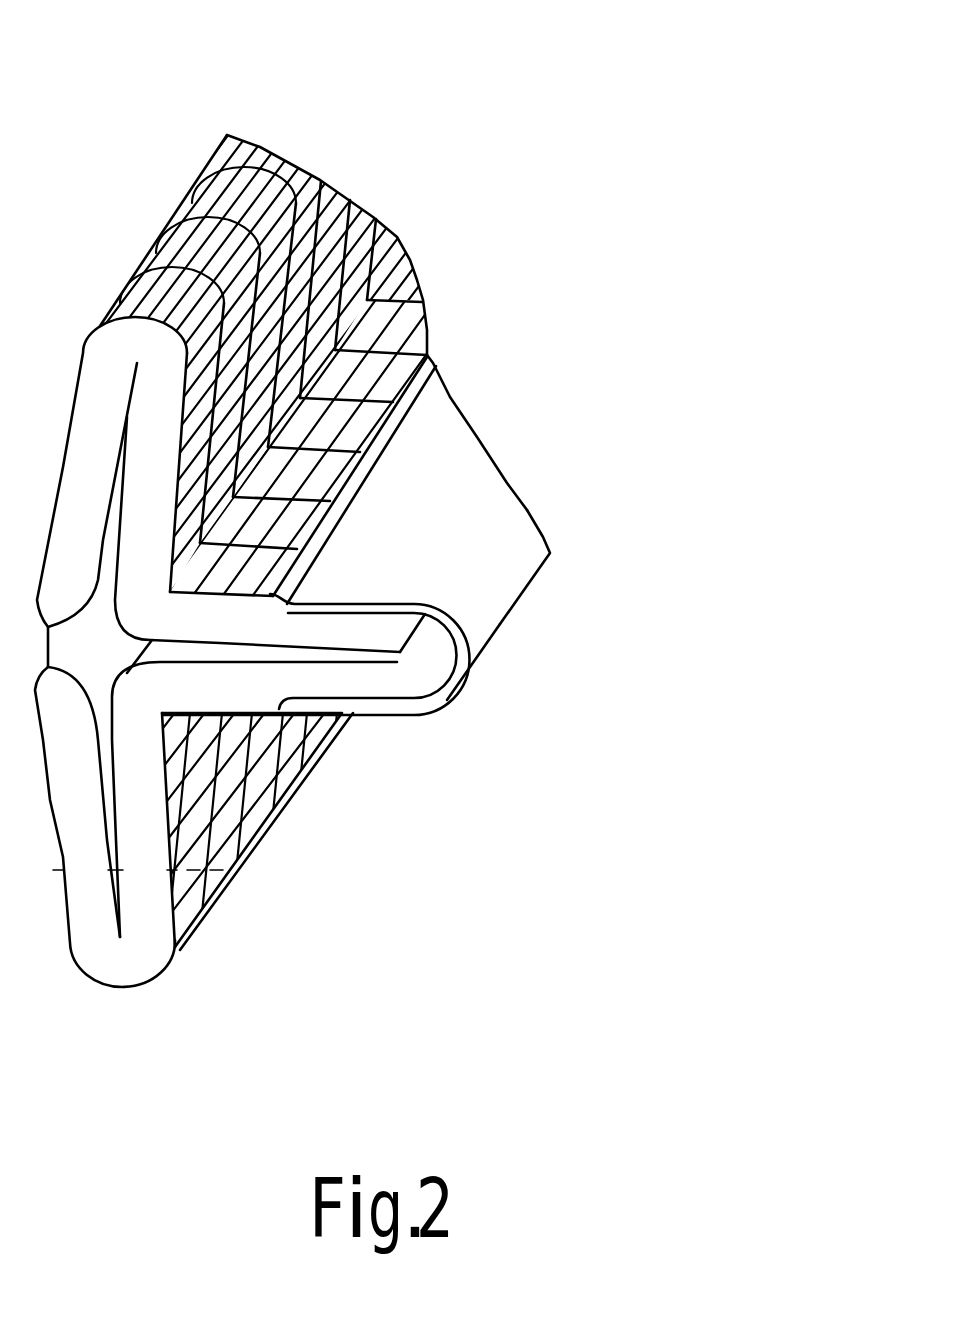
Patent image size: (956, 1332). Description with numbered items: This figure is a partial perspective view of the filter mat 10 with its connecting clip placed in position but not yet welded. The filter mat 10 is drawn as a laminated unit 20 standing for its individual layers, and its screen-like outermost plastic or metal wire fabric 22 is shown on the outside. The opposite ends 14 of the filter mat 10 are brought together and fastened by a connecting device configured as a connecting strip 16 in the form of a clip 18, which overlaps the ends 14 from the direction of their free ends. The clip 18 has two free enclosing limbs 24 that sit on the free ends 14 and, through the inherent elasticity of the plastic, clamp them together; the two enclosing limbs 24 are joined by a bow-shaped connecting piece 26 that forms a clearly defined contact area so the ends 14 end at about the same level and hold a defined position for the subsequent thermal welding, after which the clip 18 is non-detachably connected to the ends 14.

The filter mat 10 is at (410, 260).
The ends of the filter mat 14 is at (360, 628).
The connecting strip 16 is at (443, 520).
The clip 18 is at (490, 568).
The laminated unit 20 is at (115, 955).
The outermost plastic or metal wire fabric 22 is at (280, 173).
The enclosing limbs 24 is at (417, 478).
The bow-shaped connecting piece 26 is at (463, 663).